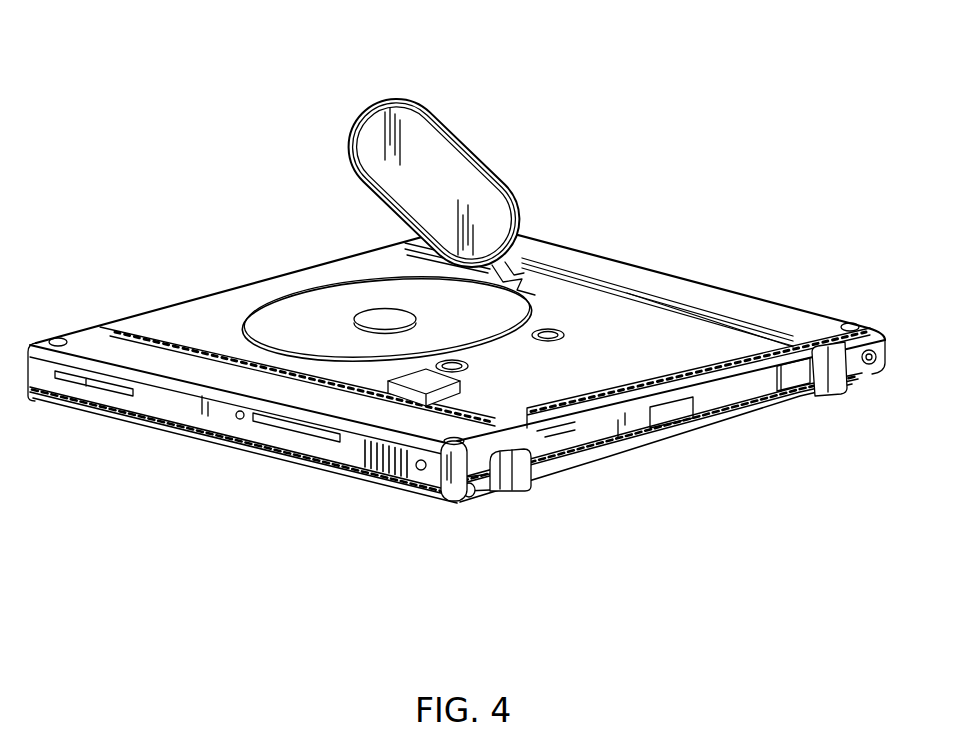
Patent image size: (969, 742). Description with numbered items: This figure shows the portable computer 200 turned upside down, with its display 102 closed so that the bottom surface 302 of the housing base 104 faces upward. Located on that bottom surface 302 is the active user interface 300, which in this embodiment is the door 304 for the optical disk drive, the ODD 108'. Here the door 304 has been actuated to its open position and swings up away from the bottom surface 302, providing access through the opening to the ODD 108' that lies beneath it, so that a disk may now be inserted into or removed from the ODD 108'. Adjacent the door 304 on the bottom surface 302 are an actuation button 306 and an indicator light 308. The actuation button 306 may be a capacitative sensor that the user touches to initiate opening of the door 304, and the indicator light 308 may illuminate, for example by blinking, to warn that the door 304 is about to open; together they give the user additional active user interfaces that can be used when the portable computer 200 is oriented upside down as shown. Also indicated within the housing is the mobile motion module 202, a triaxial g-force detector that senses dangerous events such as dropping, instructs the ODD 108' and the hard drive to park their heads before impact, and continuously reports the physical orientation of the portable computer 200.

The portable computer 200 is at (193, 82).
The display 102 is at (278, 458).
The housing base 104 is at (667, 271).
The ODD 108' is at (297, 310).
The mobile motion module 202 is at (384, 399).
The active user interface 300 is at (386, 255).
The bottom surface 302 is at (213, 317).
The door 304 is at (497, 180).
The actuation button 306 is at (470, 367).
The indicator light 308 is at (550, 331).